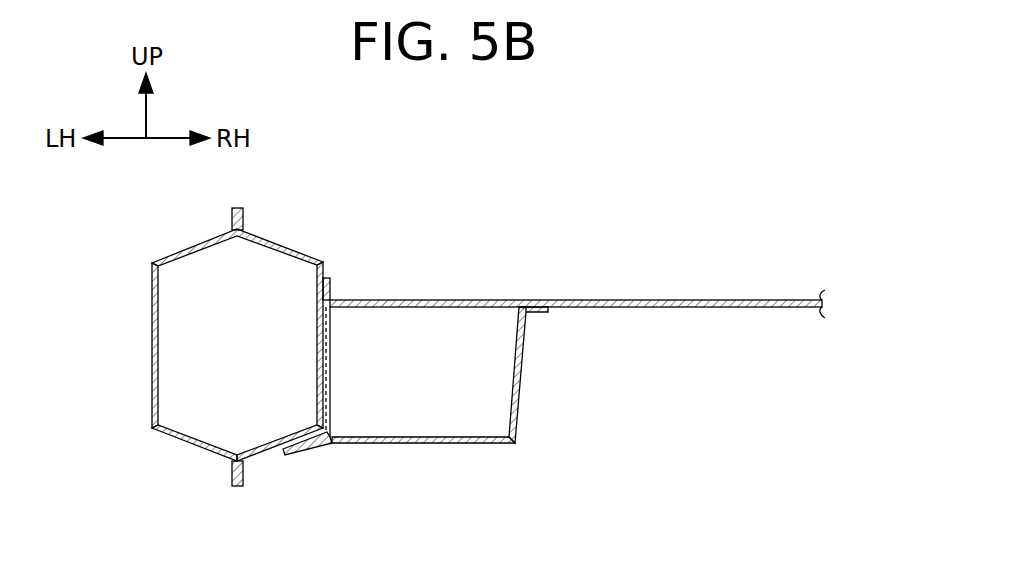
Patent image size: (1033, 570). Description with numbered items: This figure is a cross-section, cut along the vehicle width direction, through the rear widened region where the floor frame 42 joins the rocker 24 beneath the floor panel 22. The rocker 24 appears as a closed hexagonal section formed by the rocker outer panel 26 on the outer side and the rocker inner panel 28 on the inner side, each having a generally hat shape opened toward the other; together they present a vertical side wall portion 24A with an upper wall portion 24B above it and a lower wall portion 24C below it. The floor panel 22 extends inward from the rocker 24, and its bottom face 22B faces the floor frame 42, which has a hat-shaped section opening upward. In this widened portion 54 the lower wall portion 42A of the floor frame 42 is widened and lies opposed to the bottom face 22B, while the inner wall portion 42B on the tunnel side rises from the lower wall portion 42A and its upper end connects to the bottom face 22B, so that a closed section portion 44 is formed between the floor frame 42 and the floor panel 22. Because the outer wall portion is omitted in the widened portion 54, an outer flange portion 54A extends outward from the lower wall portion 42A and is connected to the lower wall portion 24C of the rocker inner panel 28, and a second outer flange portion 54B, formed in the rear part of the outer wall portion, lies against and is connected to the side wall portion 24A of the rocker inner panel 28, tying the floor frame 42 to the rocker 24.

The floor panel 22 is at (577, 275).
The bottom face of the floor panel 22B is at (612, 308).
The rocker 24 is at (203, 368).
The side wall portion 24A is at (317, 336).
The upper wall portion 24B is at (283, 246).
The lower wall portion 24C is at (280, 453).
The rocker outer panel 26 is at (190, 447).
The rocker inner panel 28 is at (262, 458).
The floor frame 42 is at (476, 409).
The lower wall portion 42A is at (430, 445).
The inner wall portion 42B is at (524, 380).
The closed section portion 44 is at (441, 397).
The widened portion 54 is at (399, 393).
The outer flange portion 54A is at (303, 447).
The outer flange portion 54B is at (333, 353).